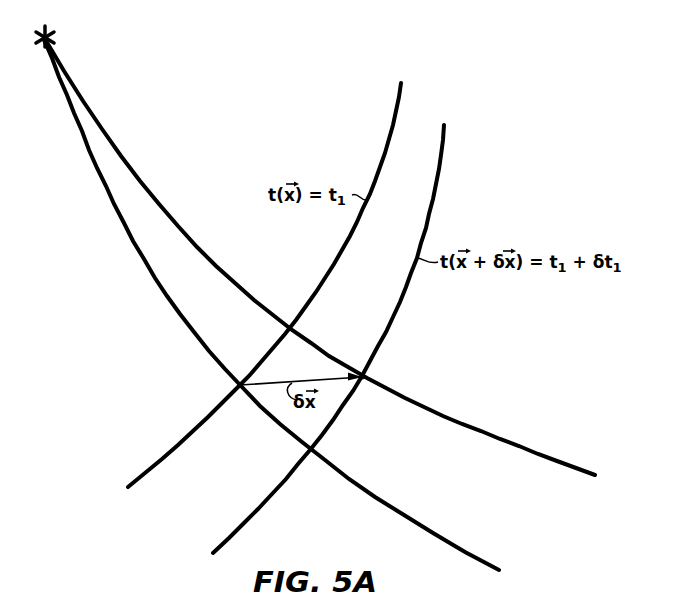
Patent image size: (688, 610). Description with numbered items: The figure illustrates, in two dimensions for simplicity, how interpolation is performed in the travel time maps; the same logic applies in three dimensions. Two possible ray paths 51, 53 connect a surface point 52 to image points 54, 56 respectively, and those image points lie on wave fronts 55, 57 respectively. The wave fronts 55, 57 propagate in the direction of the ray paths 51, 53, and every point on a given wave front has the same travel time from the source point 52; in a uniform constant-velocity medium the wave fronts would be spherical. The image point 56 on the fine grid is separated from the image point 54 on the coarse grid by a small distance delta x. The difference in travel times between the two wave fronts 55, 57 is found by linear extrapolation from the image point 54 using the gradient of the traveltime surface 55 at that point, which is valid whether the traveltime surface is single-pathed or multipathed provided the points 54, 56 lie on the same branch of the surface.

The ray path 51 is at (73, 124).
The surface point 52 is at (57, 35).
The ray path 53 is at (87, 106).
The image point 54 is at (237, 386).
The wave front 55 is at (151, 470).
The image point 56 is at (365, 377).
The wave front 57 is at (229, 541).